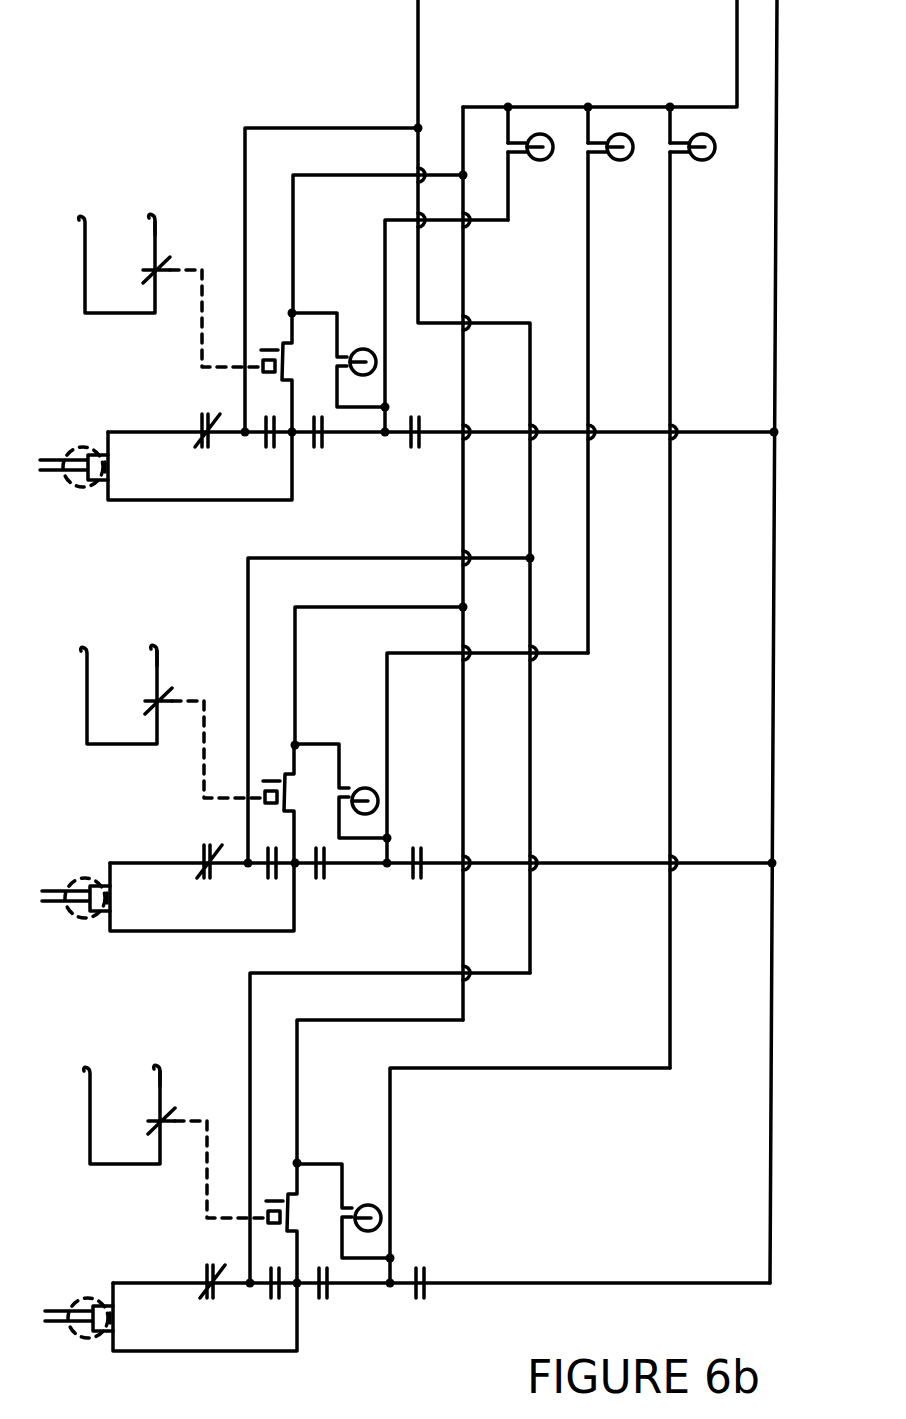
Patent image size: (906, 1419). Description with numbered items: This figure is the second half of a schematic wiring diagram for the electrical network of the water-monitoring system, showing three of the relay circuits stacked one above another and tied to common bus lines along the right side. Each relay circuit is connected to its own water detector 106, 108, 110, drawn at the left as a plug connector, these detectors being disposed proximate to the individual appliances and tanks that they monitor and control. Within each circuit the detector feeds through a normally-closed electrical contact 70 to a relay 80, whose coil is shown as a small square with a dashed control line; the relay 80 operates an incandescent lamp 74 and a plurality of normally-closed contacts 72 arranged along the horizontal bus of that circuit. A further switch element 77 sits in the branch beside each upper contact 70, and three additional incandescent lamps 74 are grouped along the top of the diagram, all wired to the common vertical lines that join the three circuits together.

The normally-closed electrical contact 70 is at (165, 266).
The normally-closed contacts 72 is at (270, 449).
The incandescent lamp 74 is at (540, 160).
The switch 77 is at (157, 222).
The relay 80 is at (263, 372).
The water detector 106 is at (85, 445).
The water detector 108 is at (88, 878).
The water detector 110 is at (98, 1300).